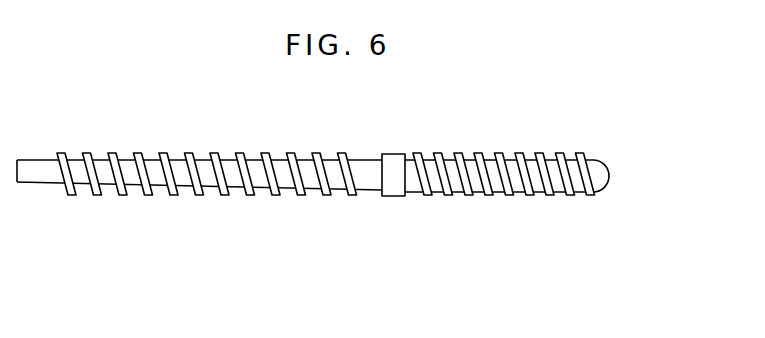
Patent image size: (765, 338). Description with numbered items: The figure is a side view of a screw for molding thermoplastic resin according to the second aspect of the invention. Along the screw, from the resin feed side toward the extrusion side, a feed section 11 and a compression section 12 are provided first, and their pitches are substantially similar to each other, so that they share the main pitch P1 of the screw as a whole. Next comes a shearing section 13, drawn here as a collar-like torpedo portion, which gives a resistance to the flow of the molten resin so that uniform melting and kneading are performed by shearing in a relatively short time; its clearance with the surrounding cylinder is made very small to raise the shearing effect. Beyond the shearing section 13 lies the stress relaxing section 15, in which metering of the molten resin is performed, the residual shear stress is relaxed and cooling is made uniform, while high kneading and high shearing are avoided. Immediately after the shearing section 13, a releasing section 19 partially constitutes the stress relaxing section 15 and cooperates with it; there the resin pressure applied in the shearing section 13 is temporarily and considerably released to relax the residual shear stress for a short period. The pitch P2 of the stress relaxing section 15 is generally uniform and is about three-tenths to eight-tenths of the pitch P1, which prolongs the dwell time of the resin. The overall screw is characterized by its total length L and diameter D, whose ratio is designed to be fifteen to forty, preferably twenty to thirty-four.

The feed section 11 is at (53, 290).
The compression section 12 is at (357, 200).
The shearing section 13 is at (383, 200).
The stress relaxing section 15 is at (607, 293).
The releasing section 19 is at (440, 138).
The pitch in the main portion of the screw P1 is at (335, 143).
The pitch in the stress relaxing section P2 is at (510, 143).
The diameter of the screw D is at (582, 155).
The total length of the screw L is at (607, 282).